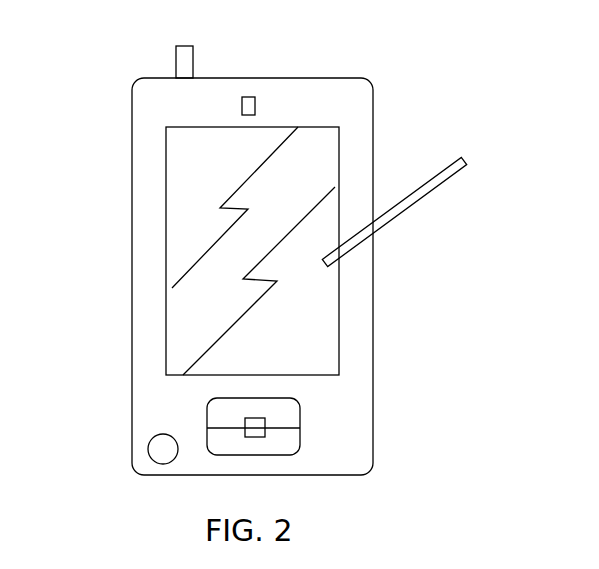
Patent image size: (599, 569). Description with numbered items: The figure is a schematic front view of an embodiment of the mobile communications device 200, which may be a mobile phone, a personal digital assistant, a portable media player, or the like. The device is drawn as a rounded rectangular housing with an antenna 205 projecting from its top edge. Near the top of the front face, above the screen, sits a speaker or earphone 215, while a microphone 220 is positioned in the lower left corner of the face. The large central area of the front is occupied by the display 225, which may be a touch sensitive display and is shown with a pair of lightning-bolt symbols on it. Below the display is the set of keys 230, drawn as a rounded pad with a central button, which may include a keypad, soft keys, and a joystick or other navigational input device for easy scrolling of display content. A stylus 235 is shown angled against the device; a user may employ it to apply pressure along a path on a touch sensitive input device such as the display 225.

The mobile communications device 200 is at (403, 278).
The antenna 205 is at (176, 67).
The speaker or earphone 215 is at (242, 96).
The microphone 220 is at (160, 457).
The display 225 is at (178, 210).
The set of keys 230 is at (300, 428).
The stylus 235 is at (427, 185).